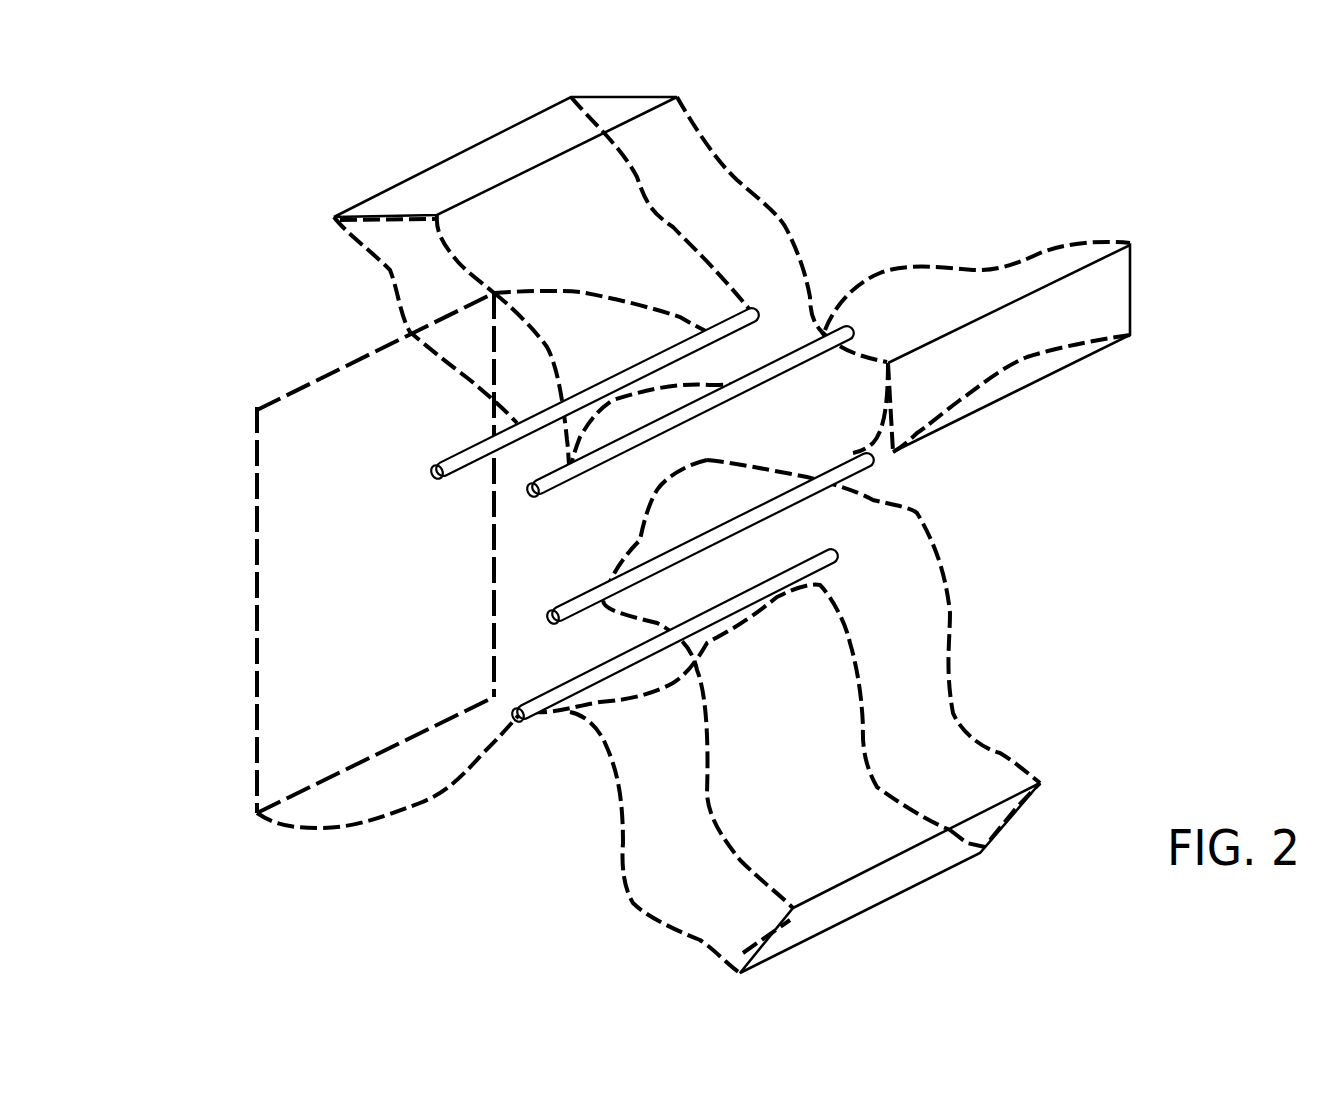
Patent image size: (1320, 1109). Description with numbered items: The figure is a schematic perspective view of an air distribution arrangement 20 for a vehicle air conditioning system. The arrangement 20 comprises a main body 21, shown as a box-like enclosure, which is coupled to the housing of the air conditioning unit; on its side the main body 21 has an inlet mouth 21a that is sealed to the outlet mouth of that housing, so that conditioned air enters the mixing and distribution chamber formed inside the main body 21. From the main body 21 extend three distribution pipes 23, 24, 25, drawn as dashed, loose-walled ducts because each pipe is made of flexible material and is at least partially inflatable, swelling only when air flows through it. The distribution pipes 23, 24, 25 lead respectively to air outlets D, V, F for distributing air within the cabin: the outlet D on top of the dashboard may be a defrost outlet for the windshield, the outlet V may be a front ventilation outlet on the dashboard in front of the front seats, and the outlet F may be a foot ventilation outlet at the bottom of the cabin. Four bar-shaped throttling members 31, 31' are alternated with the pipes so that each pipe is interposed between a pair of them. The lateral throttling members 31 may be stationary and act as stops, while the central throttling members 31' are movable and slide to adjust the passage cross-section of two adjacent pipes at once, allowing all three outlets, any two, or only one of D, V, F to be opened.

The air distribution arrangement 20 is at (1113, 203).
The main body 21 is at (400, 818).
The inlet mouth 21a is at (257, 622).
The distribution pipe 23 is at (790, 213).
The distribution pipe 24 is at (983, 267).
The distribution pipe 25 is at (970, 717).
The lateral throttling member 31 is at (634, 451).
The central throttling member 31' is at (770, 402).
The defrost air outlet D is at (456, 154).
The front ventilation air outlet V is at (1137, 320).
The foot ventilation air outlet F is at (903, 897).